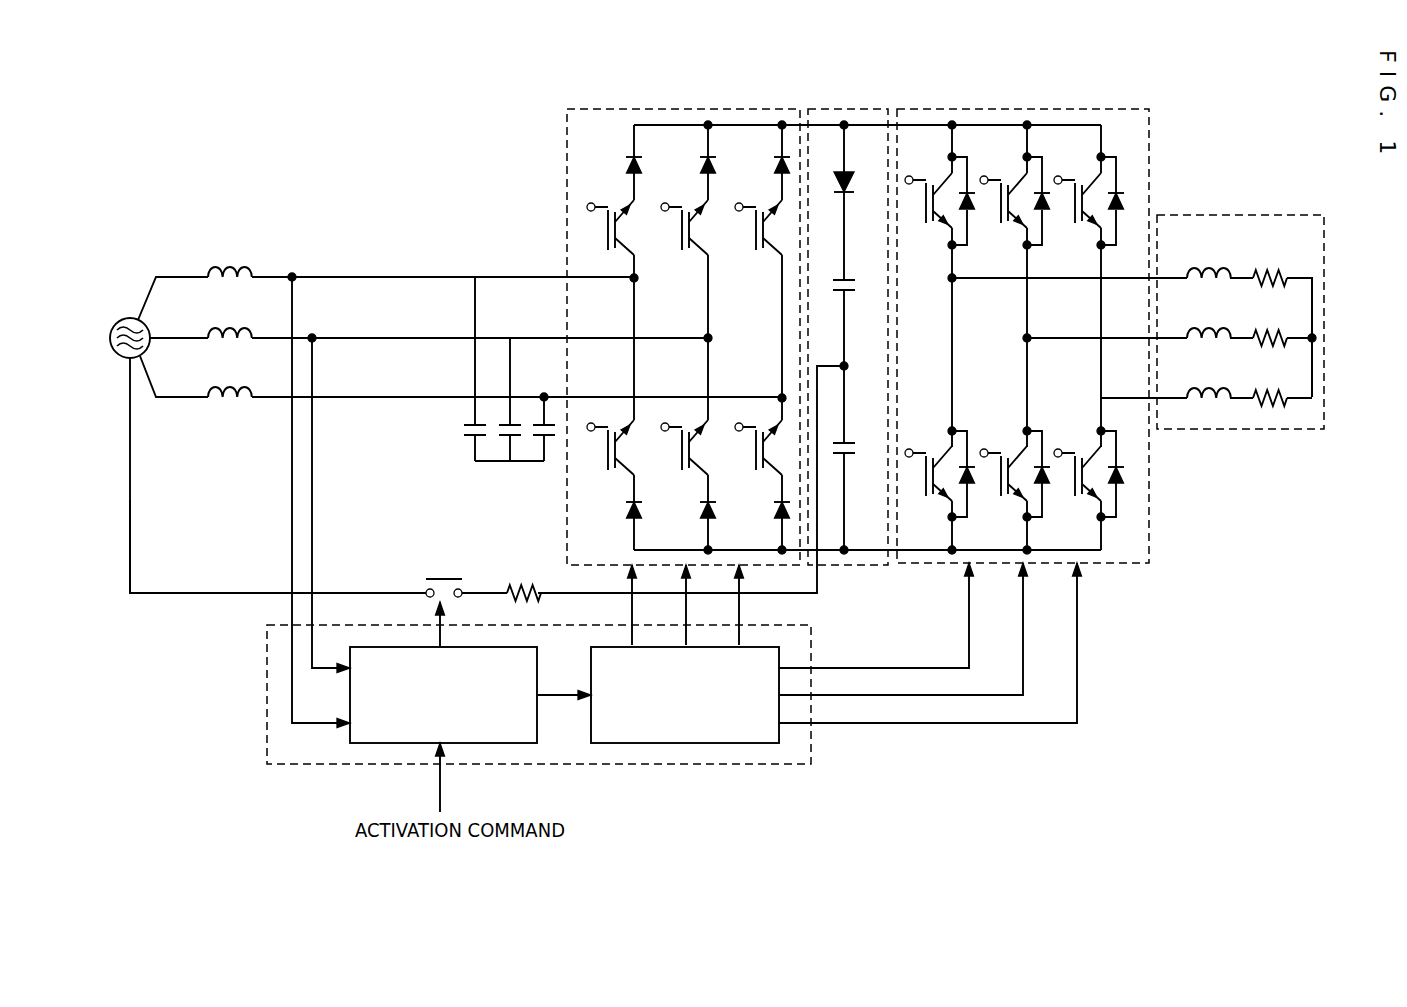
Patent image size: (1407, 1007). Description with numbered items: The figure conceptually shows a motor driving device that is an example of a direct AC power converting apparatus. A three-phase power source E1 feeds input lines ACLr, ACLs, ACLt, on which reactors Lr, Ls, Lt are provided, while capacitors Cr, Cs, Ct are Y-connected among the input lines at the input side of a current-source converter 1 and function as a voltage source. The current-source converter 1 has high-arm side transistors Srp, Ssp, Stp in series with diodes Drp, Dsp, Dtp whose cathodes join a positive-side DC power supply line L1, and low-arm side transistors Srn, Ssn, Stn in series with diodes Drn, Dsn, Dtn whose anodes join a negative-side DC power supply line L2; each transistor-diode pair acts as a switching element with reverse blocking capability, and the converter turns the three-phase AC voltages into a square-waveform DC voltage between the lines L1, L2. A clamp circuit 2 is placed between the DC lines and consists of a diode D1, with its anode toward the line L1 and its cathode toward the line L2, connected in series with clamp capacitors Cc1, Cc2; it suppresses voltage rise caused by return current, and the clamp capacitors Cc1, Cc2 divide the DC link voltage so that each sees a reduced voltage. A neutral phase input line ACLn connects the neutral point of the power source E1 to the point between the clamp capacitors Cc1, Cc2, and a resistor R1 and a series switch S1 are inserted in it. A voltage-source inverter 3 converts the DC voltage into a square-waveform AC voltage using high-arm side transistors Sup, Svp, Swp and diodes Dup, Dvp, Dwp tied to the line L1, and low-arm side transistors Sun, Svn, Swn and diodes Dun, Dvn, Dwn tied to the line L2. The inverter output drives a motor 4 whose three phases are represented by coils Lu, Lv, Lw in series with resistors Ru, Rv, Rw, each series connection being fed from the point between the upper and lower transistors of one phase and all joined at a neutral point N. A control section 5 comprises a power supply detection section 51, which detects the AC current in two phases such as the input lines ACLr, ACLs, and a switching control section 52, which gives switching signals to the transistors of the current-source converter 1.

The current-source converter 1 is at (612, 108).
The clamp circuit 2 is at (836, 108).
The voltage-source inverter 3 is at (972, 108).
The motor 4 is at (1240, 214).
The control section 5 is at (770, 766).
The power supply detection section 51 is at (512, 744).
The switching control section 52 is at (700, 744).
The power source E1 is at (128, 316).
The input line ACLr is at (175, 276).
The input line ACLs is at (182, 335).
The input line ACLt is at (180, 398).
The neutral phase input line ACLn is at (278, 569).
The reactor Lr is at (228, 266).
The reactor Ls is at (230, 329).
The reactor Lt is at (230, 388).
The capacitor Cr is at (470, 437).
The capacitor Cs is at (505, 437).
The capacitor Ct is at (538, 437).
The switch S1 is at (444, 576).
The resistor R1 is at (516, 580).
The diode Drp is at (626, 166).
The diode Dsp is at (700, 166).
The diode Dtp is at (774, 166).
The diode Drn is at (628, 513).
The diode Dsn is at (702, 513).
The diode Dtn is at (776, 513).
The high-arm side transistor Srp is at (609, 215).
The high-arm side transistor Ssp is at (683, 215).
The high-arm side transistor Stp is at (756, 215).
The low-arm side transistor Srn is at (609, 436).
The low-arm side transistor Ssn is at (683, 436).
The low-arm side transistor Stn is at (756, 436).
The diode D1 is at (855, 180).
The clamp capacitor Cc1 is at (856, 292).
The clamp capacitor Cc2 is at (856, 455).
The DC power supply line L1 is at (874, 122).
The DC power supply line L2 is at (864, 553).
The high-arm side transistor Sup is at (927, 188).
The high-arm side transistor Svp is at (1002, 188).
The high-arm side transistor Swp is at (1075, 188).
The low-arm side transistor Sun is at (927, 460).
The low-arm side transistor Svn is at (1002, 460).
The low-arm side transistor Swn is at (1075, 460).
The diode Dup is at (972, 212).
The diode Dvp is at (1047, 212).
The diode Dwp is at (1121, 212).
The diode Dun is at (972, 486).
The diode Dvn is at (1047, 486).
The diode Dwn is at (1121, 486).
The coil Lu is at (1208, 268).
The coil Lv is at (1208, 328).
The coil Lw is at (1208, 388).
The resistor Ru is at (1270, 268).
The resistor Rv is at (1270, 328).
The resistor Rw is at (1270, 388).
The neutral point N is at (1310, 342).